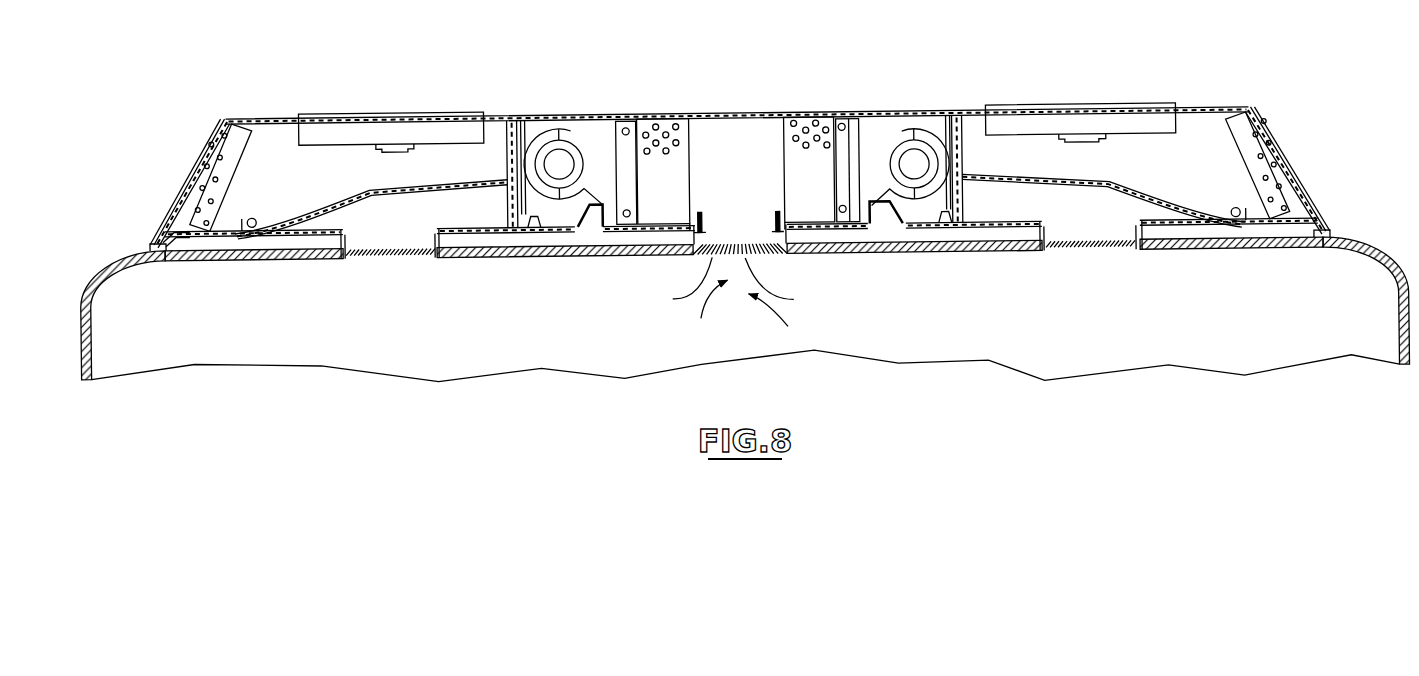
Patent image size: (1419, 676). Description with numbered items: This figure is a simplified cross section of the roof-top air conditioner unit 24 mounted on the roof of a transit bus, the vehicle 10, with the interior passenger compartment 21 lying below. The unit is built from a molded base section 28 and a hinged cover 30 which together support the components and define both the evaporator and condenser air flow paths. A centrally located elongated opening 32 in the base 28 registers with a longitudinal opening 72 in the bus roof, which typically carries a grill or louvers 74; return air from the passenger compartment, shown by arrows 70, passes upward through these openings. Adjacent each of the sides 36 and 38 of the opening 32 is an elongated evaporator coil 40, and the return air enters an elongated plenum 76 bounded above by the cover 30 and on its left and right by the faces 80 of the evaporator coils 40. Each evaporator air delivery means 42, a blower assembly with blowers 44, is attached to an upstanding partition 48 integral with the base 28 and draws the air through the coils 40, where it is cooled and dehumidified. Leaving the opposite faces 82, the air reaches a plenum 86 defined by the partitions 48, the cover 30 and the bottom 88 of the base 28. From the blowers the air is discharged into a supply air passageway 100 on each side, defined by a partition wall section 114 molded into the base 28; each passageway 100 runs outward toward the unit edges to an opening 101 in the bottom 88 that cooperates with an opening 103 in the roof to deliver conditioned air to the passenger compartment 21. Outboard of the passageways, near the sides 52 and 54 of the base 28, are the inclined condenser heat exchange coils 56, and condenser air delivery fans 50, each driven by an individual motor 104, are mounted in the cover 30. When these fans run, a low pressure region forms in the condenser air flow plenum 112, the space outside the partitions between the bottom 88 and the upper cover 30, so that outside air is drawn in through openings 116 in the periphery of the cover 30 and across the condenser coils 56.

The vehicle 10 is at (1150, 395).
The interior passenger compartment 21 is at (987, 348).
The air conditioner unit 24 is at (694, 80).
The base section 28 is at (183, 220).
The cover 30 is at (242, 112).
The elongated opening 32 is at (698, 226).
The side of the elongated opening 36 is at (677, 285).
The side of the elongated opening 38 is at (780, 234).
The evaporator coil 40 is at (694, 134).
The evaporator air delivery means 42 is at (556, 112).
The blower 44 is at (581, 125).
The partition 48 is at (517, 114).
The condenser air delivery fan 50 is at (298, 110).
The side of the base 52 is at (152, 240).
The side of the base 54 is at (1330, 242).
The condenser heat exchange coil 56 is at (206, 136).
The arrows 70 is at (735, 306).
The longitudinal opening 72 is at (699, 234).
The grill or louvers 74 is at (785, 287).
The elongated plenum 76 is at (718, 171).
The face of the evaporator coil 80 is at (787, 205).
The opposite face of the evaporator coil 82 is at (875, 133).
The plenum 86 is at (571, 125).
The bottom of the base 88 is at (298, 229).
The supply air passageway 100 is at (430, 205).
The opening 101 is at (352, 250).
The opening in the roof 103 is at (343, 257).
The motor 104 is at (398, 151).
The condenser air flow plenum 112 is at (320, 152).
The partition wall section 114 is at (420, 180).
The opening 116 is at (204, 160).